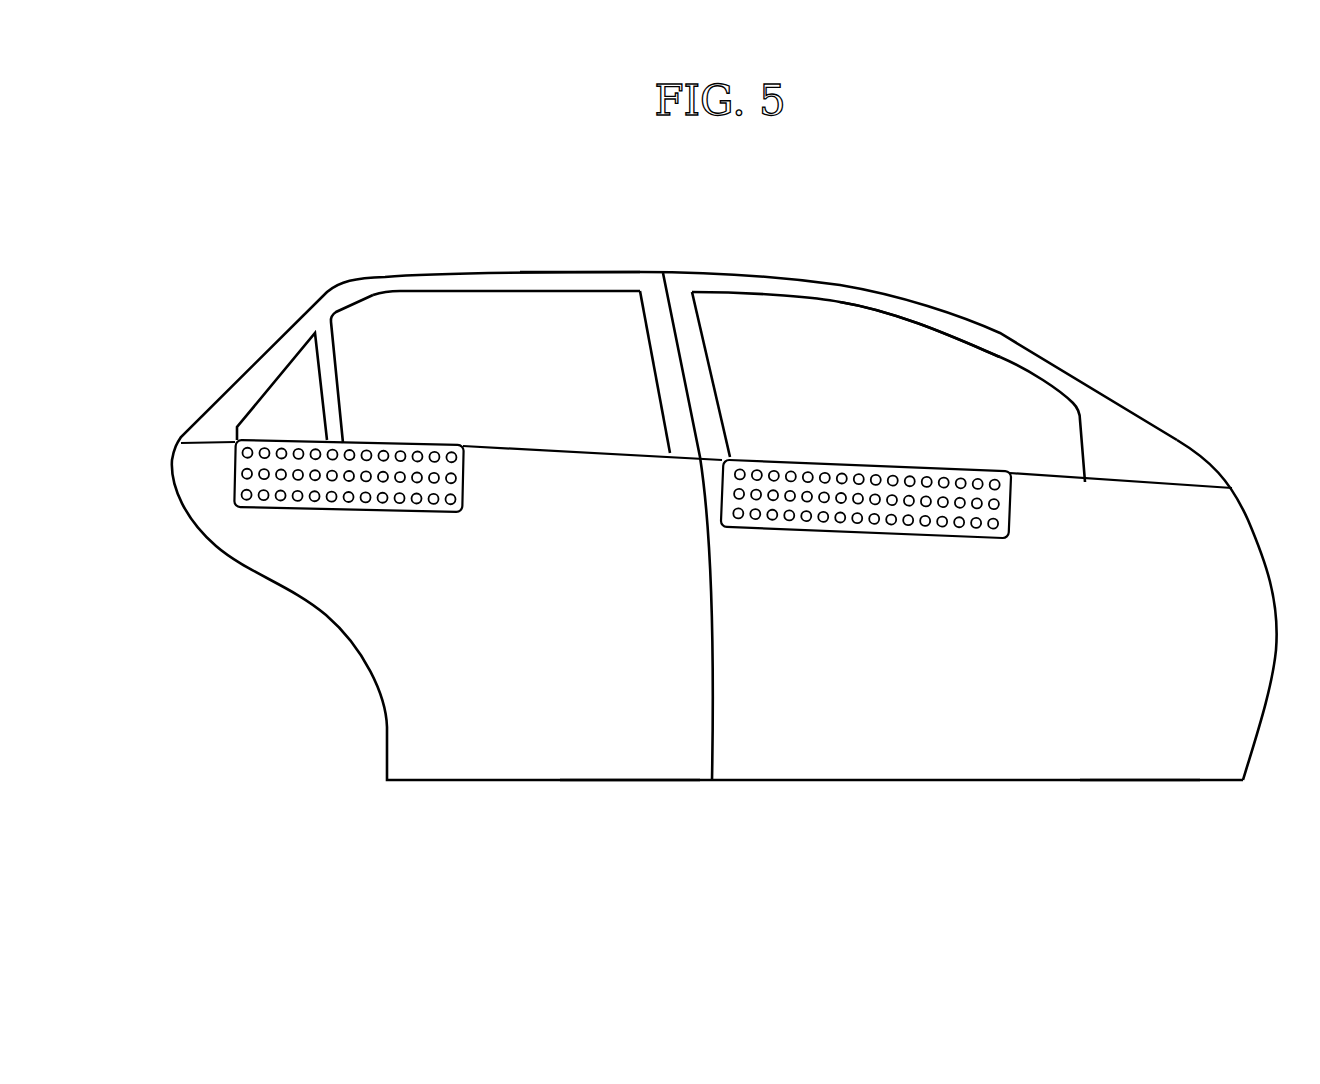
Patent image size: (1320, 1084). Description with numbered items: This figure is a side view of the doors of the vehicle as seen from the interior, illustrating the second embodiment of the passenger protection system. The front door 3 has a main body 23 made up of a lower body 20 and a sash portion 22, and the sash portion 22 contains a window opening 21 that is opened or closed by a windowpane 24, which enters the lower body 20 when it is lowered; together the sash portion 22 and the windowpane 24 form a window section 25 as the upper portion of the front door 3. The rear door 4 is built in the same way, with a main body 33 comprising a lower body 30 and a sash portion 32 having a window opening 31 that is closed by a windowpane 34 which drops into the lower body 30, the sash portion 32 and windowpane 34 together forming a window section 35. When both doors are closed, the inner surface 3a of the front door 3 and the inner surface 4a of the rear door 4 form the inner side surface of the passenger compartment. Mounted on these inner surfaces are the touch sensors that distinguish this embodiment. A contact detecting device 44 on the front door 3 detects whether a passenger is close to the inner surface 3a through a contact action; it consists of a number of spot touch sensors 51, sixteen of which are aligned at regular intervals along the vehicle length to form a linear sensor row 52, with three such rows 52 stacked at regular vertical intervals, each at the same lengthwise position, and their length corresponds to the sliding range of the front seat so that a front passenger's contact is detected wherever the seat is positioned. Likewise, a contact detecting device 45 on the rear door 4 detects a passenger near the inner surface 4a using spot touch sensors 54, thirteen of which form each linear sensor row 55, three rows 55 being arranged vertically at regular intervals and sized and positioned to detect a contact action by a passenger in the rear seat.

The front door 3 is at (1107, 350).
The inner surface of the front door 3a is at (1133, 730).
The rear door 4 is at (342, 268).
The inner surface of the rear door 4a is at (616, 732).
The lower body 20 is at (963, 737).
The window opening 21 is at (897, 320).
The sash portion 22 is at (868, 297).
The main body 23 is at (1175, 440).
The windowpane 24 is at (782, 350).
The window section 25 is at (1017, 338).
The lower body 30 is at (497, 718).
The window opening 31 is at (500, 296).
The sash portion 32 is at (468, 277).
The main body 33 is at (623, 272).
The windowpane 34 is at (400, 337).
The window section 35 is at (568, 272).
The contact detecting device 44 is at (843, 536).
The contact detecting device 45 is at (325, 513).
The spot touch sensor 51 is at (875, 477).
The sensor row 52 is at (1012, 488).
The spot touch sensor 54 is at (242, 453).
The sensor row 55 is at (465, 460).